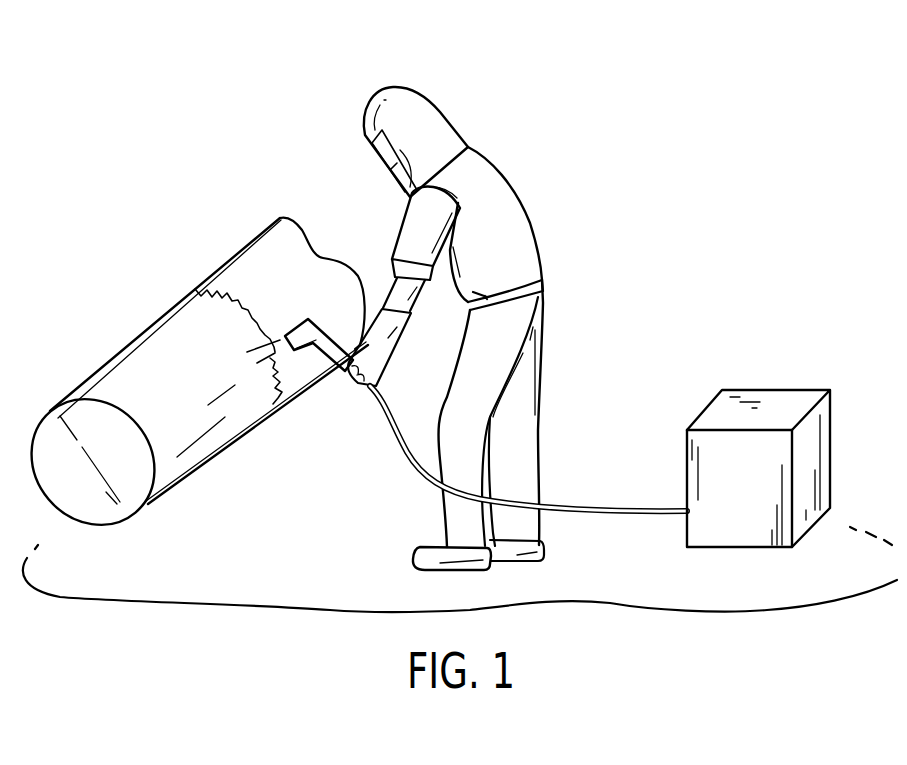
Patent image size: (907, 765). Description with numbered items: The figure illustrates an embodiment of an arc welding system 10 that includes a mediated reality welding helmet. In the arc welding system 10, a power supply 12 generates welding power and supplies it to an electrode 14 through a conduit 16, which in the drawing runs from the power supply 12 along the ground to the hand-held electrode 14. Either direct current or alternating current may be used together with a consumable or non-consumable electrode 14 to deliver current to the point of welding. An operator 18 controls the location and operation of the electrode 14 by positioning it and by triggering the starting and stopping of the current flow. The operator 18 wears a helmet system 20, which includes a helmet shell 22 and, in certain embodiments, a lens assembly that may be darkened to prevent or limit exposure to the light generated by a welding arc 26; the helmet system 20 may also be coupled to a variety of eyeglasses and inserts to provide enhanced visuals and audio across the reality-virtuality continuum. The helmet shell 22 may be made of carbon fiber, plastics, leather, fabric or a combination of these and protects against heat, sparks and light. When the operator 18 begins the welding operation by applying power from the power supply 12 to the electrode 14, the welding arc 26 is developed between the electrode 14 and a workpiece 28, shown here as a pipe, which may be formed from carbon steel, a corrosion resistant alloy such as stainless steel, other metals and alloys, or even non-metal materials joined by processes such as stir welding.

The arc welding system 10 is at (697, 93).
The power supply 12 is at (776, 390).
The electrode 14 is at (326, 335).
The conduit 16 is at (602, 505).
The operator 18 is at (533, 215).
The helmet system 20 is at (438, 93).
The helmet shell 22 is at (442, 151).
The welding arc 26 is at (263, 370).
The workpiece 28 is at (170, 312).